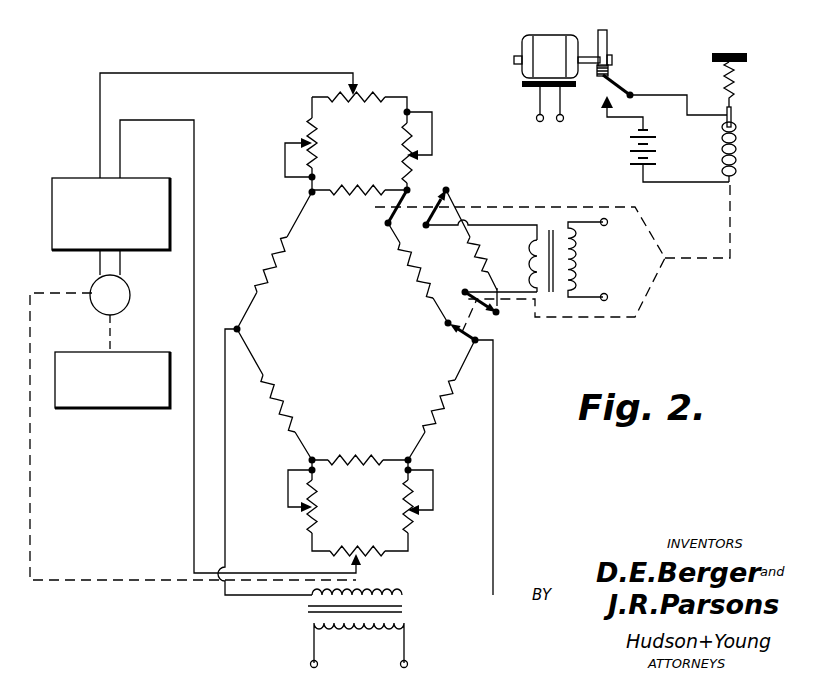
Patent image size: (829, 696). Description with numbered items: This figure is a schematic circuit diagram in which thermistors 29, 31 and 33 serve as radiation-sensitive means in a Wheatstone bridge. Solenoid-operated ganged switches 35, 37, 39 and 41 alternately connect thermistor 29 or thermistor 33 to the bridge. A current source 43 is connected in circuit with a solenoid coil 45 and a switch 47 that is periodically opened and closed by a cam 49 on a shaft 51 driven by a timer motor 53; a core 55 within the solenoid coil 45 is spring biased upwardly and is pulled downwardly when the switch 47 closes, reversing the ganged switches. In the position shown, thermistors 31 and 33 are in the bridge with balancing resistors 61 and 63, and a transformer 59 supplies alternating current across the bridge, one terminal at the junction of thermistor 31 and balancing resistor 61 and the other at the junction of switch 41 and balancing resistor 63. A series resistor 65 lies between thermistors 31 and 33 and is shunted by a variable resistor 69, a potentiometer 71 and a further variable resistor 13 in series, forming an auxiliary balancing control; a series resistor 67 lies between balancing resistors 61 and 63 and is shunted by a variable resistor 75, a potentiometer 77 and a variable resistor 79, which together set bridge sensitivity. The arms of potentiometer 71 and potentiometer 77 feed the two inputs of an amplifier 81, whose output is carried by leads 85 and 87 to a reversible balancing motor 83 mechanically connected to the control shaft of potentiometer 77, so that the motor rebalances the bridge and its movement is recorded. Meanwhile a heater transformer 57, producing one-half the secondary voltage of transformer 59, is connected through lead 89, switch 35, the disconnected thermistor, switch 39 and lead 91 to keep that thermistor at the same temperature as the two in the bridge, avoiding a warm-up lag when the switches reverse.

The beam 13 is at (407, 147).
The thermistor 29 is at (477, 258).
The thermistor 31 is at (283, 270).
The thermistor 33 is at (416, 292).
The ganged switch 35 is at (426, 214).
The ganged switch 37 is at (386, 225).
The ganged switch 39 is at (496, 313).
The ganged switch 41 is at (463, 340).
The current source 43 is at (636, 161).
The solenoid coil 45 is at (738, 156).
The switch 47 is at (622, 86).
The cam 49 is at (610, 40).
The shaft 51 is at (592, 55).
The timer motor 53 is at (527, 42).
The core 55 is at (733, 115).
The transformer 57 is at (554, 298).
The transformer 59 is at (405, 607).
The balancing resistor 61 is at (285, 386).
The balancing resistor 63 is at (436, 400).
The series resistor 65 is at (336, 196).
The series resistor 67 is at (358, 458).
The variable resistor 69 is at (318, 161).
The potentiometer 71 is at (341, 102).
The variable resistor 75 is at (318, 491).
The potentiometer 77 is at (373, 556).
The variable resistor 79 is at (404, 502).
The amplifier 81 is at (75, 163).
The balancing motor 83 is at (93, 307).
The lead 85 is at (100, 265).
The lead 87 is at (120, 265).
The lead 89 is at (91, 408).
The lead 91 is at (514, 294).